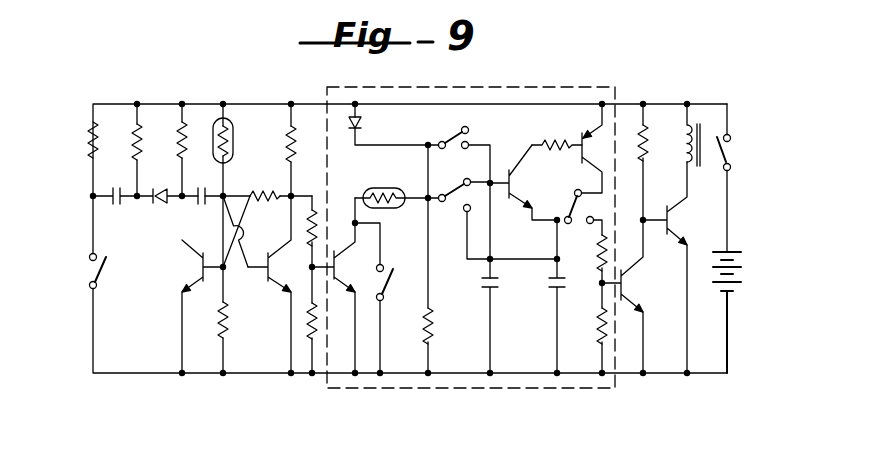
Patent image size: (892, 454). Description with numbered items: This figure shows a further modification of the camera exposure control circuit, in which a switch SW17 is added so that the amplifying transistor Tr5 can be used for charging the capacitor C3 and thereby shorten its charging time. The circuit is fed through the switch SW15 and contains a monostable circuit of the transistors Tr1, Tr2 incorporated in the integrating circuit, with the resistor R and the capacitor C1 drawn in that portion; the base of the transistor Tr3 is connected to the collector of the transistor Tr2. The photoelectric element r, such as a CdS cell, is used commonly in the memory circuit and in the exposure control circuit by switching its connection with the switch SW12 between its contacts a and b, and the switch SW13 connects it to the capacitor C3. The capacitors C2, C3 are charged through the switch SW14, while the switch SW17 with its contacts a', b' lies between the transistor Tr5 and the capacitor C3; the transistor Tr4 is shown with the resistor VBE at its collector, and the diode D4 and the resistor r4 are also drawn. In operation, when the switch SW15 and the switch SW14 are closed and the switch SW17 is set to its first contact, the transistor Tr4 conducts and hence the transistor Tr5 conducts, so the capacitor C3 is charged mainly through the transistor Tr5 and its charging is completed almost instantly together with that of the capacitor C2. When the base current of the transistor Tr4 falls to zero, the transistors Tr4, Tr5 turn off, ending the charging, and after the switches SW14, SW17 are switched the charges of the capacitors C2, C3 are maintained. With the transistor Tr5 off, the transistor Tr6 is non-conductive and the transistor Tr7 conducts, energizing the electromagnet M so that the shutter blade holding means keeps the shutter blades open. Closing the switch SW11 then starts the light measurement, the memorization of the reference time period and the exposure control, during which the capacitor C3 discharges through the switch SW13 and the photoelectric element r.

The thermistor R is at (231, 150).
The capacitor C1 is at (200, 184).
The transistor Tr1 is at (202, 306).
The transistor Tr2 is at (269, 284).
The transistor Tr3 is at (333, 298).
The transistor Tr4 is at (523, 182).
The amplifying transistor Tr5 is at (615, 162).
The transistor Tr6 is at (634, 296).
The transistor Tr7 is at (665, 267).
The switch SW11 is at (125, 276).
The switch SW12 is at (459, 210).
The switch SW13 is at (393, 298).
The switch SW14 is at (476, 196).
The switch SW15 is at (752, 178).
The switch SW17 is at (585, 282).
The diode D4 is at (388, 125).
The photoelectric element r is at (391, 192).
The resistor r4 is at (440, 259).
The capacitor C2 is at (505, 325).
The capacitor C3 is at (543, 296).
The base-emitter voltage resistor VBE is at (557, 132).
The electromagnet M is at (705, 135).
The switch contact a is at (461, 172).
The contact b is at (476, 204).
The switch contact a' is at (566, 207).
The switch contact b' is at (601, 207).